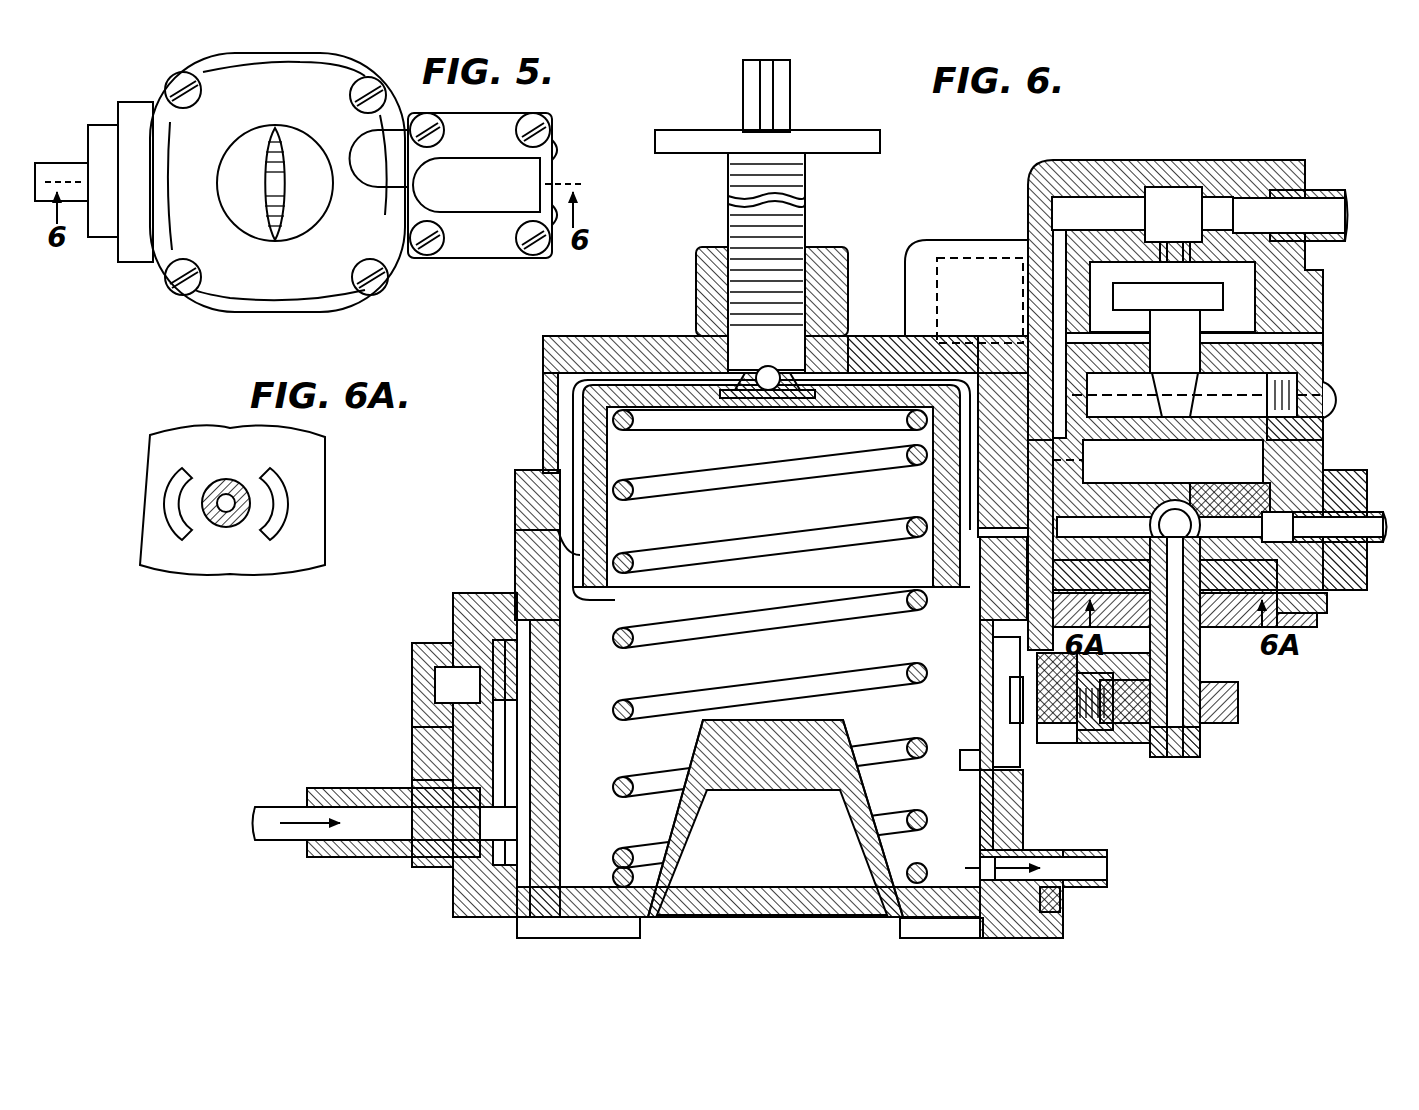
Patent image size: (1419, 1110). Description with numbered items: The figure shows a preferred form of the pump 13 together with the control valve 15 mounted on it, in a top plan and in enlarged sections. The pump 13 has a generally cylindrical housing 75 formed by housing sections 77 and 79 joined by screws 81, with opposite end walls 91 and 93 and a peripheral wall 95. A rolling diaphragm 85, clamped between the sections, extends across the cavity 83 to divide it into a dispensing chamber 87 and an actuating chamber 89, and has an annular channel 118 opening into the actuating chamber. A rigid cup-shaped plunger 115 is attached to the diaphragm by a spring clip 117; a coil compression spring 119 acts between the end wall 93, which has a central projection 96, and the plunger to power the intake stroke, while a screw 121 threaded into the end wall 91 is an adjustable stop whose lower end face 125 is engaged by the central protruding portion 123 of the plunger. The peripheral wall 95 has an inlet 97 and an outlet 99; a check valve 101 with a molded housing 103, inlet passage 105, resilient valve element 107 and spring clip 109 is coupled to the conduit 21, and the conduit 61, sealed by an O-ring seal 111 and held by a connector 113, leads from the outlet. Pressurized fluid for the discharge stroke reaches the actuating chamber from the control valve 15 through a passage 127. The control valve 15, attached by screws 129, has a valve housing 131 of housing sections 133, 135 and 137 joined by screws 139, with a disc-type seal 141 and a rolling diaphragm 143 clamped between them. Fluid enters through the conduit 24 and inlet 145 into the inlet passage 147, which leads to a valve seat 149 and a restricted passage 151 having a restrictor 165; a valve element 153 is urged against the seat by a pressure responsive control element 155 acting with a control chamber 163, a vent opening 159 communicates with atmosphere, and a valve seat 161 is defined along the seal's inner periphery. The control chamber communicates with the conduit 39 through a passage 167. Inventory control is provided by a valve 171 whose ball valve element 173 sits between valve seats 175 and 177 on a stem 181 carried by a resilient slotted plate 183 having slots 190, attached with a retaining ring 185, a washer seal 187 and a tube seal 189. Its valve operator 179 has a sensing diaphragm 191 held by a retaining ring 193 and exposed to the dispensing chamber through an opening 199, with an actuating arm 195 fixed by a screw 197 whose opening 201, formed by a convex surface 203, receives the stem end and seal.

In FIG. 5, the pump 13 is at (215, 318).
In FIG. 6, the pump 13 is at (540, 428).
In FIG. 6, the control valve 15 is at (1212, 153).
In FIG. 6, the conduit 21 is at (278, 800).
In FIG. 6, the conduit 24 is at (1322, 200).
In FIG. 6, the conduit 39 is at (1375, 518).
In FIG. 6, the conduit 61 is at (1100, 860).
In FIG. 6, the housing 75 is at (513, 497).
In FIG. 6, the housing section 77 is at (543, 350).
In FIG. 6, the housing section 79 is at (523, 545).
In FIG. 5, the screws 81 is at (178, 86).
In FIG. 6, the cavity 83 is at (622, 348).
In FIG. 6, the rolling diaphragm 85 is at (573, 395).
In FIG. 6, the dispensing chamber 87 is at (665, 760).
In FIG. 6, the actuating chamber 89 is at (583, 460).
In FIG. 6, the end wall 91 is at (670, 345).
In FIG. 6, the end wall 93 is at (885, 915).
In FIG. 6, the peripheral wall 95 is at (540, 600).
In FIG. 6, the central projection 96 is at (775, 730).
In FIG. 6, the inlet 97 is at (545, 790).
In FIG. 6, the outlet 99 is at (985, 865).
In FIG. 6, the check valve 101 is at (410, 686).
In FIG. 6, the housing 103 is at (420, 715).
In FIG. 6, the inlet passage 105 is at (460, 830).
In FIG. 6, the valve element 107 is at (505, 822).
In FIG. 6, the spring clip 109 is at (515, 700).
In FIG. 6, the O-ring seal 111 is at (1000, 920).
In FIG. 6, the connector 113 is at (1060, 900).
In FIG. 6, the plunger 115 is at (650, 412).
In FIG. 6, the spring clip 117 is at (735, 392).
In FIG. 6, the annular channel 118 is at (598, 592).
In FIG. 6, the coil compression spring 119 is at (685, 638).
In FIG. 5, the screw 121 is at (298, 135).
In FIG. 6, the screw 121 is at (730, 185).
In FIG. 6, the central protruding portion 123 is at (790, 395).
In FIG. 6, the lower end face 125 is at (766, 392).
In FIG. 6, the passage 127 is at (965, 258).
In FIG. 5, the screws 129 is at (556, 148).
In FIG. 6, the screws 129 is at (1330, 392).
In FIG. 6, the valve housing 131 is at (1325, 312).
In FIG. 6, the housing section 133 is at (1325, 282).
In FIG. 6, the housing section 135 is at (1325, 440).
In FIG. 6, the housing section 137 is at (1367, 588).
In FIG. 5, the screws 139 is at (430, 122).
In FIG. 6, the disc-type seal 141 is at (1323, 338).
In FIG. 6, the rolling diaphragm 143 is at (1340, 478).
In FIG. 6, the inlet 145 is at (1322, 215).
In FIG. 6, the inlet passage 147 is at (1160, 195).
In FIG. 6, the valve seat 149 is at (1173, 235).
In FIG. 6, the restricted passage 151 is at (1053, 320).
In FIG. 6, the valve element 153 is at (1168, 295).
In FIG. 6, the pressure responsive control element 155 is at (1188, 407).
In FIG. 6, the vent opening 159 is at (1300, 420).
In FIG. 6, the valve seat 161 is at (1118, 340).
In FIG. 6, the control chamber 163 is at (1145, 476).
In FIG. 6, the restrictor 165 is at (1040, 360).
In FIG. 6, the passage 167 is at (1225, 510).
In FIG. 6, the valve 171 is at (1252, 678).
In FIG. 6, the valve element 173 is at (1158, 535).
In FIG. 6, the valve seat 175 is at (1150, 517).
In FIG. 6, the valve seat 177 is at (1205, 530).
In FIG. 6, the valve operator 179 is at (1080, 733).
In FIG. 6A, the stem 181 is at (225, 520).
In FIG. 6, the stem 181 is at (1195, 666).
In FIG. 6A, the resilient slotted plate 183 is at (200, 442).
In FIG. 6, the resilient slotted plate 183 is at (1140, 630).
In FIG. 6, the retaining ring 185 is at (1292, 620).
In FIG. 6, the washer seal 187 is at (1285, 600).
In FIG. 6A, the tube seal 189 is at (232, 512).
In FIG. 6, the tube seal 189 is at (1183, 758).
In FIG. 6A, the slots 190 is at (280, 490).
In FIG. 6, the slots 190 is at (1112, 565).
In FIG. 6, the sensing diaphragm 191 is at (980, 650).
In FIG. 6, the retaining ring 193 is at (1015, 800).
In FIG. 6, the actuating arm 195 is at (1225, 705).
In FIG. 6, the screw 197 is at (1010, 690).
In FIG. 6, the opening 199 is at (980, 748).
In FIG. 6, the opening 201 is at (1200, 722).
In FIG. 6, the surface 203 is at (1155, 740).